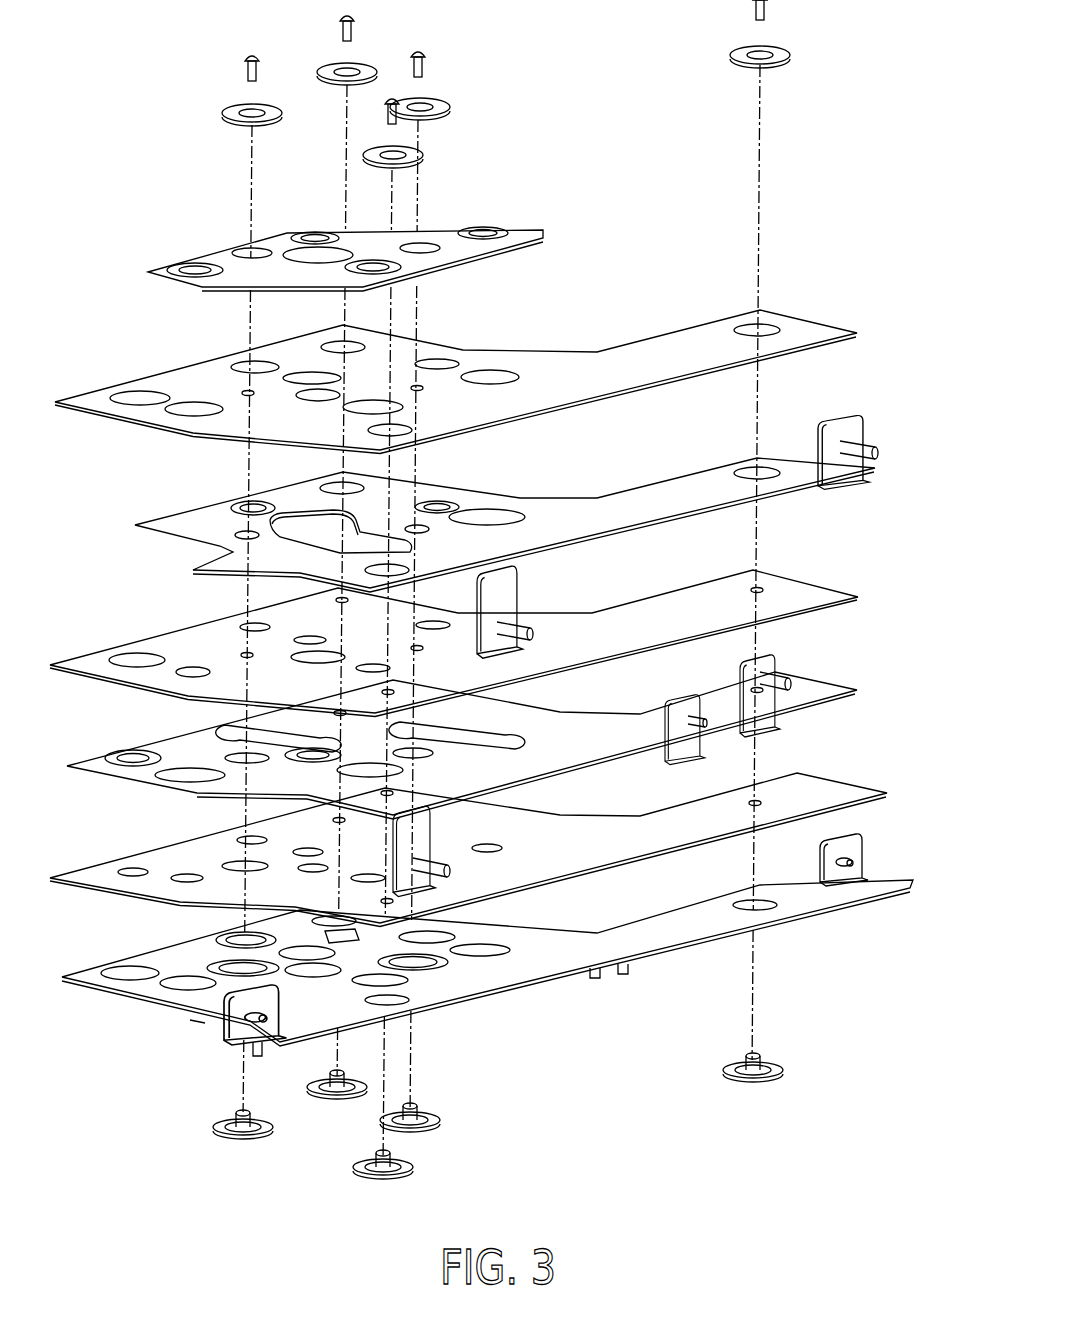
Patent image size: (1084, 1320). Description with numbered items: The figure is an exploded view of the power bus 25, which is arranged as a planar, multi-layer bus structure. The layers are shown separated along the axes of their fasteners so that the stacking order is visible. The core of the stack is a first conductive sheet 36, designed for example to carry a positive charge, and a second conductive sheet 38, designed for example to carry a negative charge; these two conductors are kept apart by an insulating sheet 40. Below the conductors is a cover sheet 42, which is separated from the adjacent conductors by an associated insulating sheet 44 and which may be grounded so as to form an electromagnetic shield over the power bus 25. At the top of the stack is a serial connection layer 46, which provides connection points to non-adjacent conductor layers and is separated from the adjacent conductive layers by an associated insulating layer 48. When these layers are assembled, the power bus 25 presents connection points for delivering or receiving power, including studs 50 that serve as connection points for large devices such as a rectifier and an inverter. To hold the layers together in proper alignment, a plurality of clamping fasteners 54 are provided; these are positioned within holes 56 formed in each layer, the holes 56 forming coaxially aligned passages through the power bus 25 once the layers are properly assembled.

The power bus 25 is at (830, 231).
The first conductive sheet 36 is at (880, 466).
The second conductive sheet 38 is at (833, 702).
The insulating sheet 40 is at (857, 595).
The cover sheet 42 is at (897, 893).
The insulating sheet 44 is at (887, 793).
The serial connection layer 46 is at (388, 237).
The insulating layer 48 is at (855, 333).
The studs 50 is at (862, 445).
The clamping fasteners 54 is at (195, 43).
The holes 56 is at (293, 233).